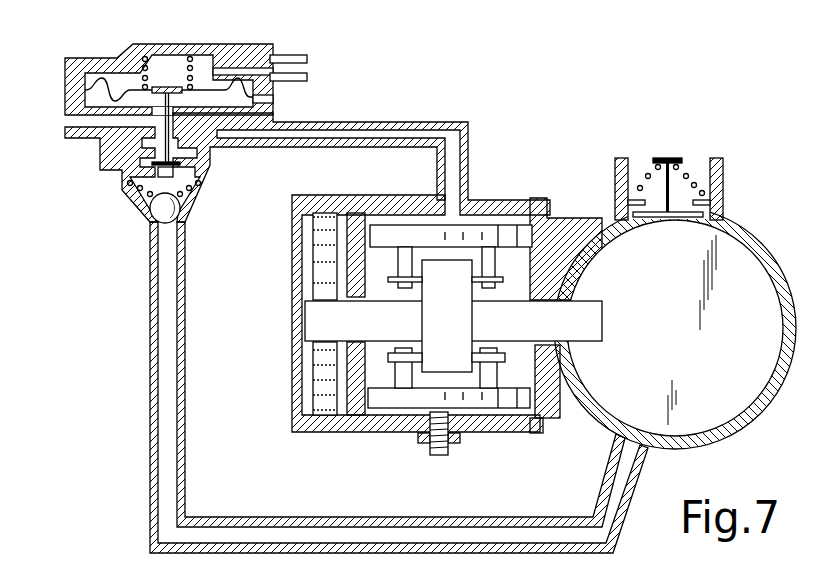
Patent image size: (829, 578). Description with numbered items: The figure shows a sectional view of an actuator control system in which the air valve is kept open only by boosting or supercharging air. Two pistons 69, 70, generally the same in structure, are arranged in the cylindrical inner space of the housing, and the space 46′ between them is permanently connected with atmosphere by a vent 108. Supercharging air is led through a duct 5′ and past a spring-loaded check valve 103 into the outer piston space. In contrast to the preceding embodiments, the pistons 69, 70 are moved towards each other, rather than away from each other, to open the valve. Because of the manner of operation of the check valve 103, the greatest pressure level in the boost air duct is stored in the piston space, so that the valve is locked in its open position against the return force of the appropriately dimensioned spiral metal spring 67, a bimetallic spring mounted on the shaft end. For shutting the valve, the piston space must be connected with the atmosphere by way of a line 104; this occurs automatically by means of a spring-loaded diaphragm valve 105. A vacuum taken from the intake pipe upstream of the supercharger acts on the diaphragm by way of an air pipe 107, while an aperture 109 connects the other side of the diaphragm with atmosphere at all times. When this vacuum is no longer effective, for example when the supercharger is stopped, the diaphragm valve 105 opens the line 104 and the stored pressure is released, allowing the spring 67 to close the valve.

The duct 5′ is at (262, 532).
The space between the pistons 46′ is at (382, 257).
The spiral metal spring 67 is at (325, 380).
The piston 69 is at (490, 400).
The piston 70 is at (492, 236).
The spring-loaded check valve 103 is at (153, 215).
The vent line 104 is at (84, 119).
The spring-loaded diaphragm valve 105 is at (167, 76).
The air pipe 107 is at (308, 69).
The vent 108 is at (337, 286).
The aperture 109 is at (273, 100).